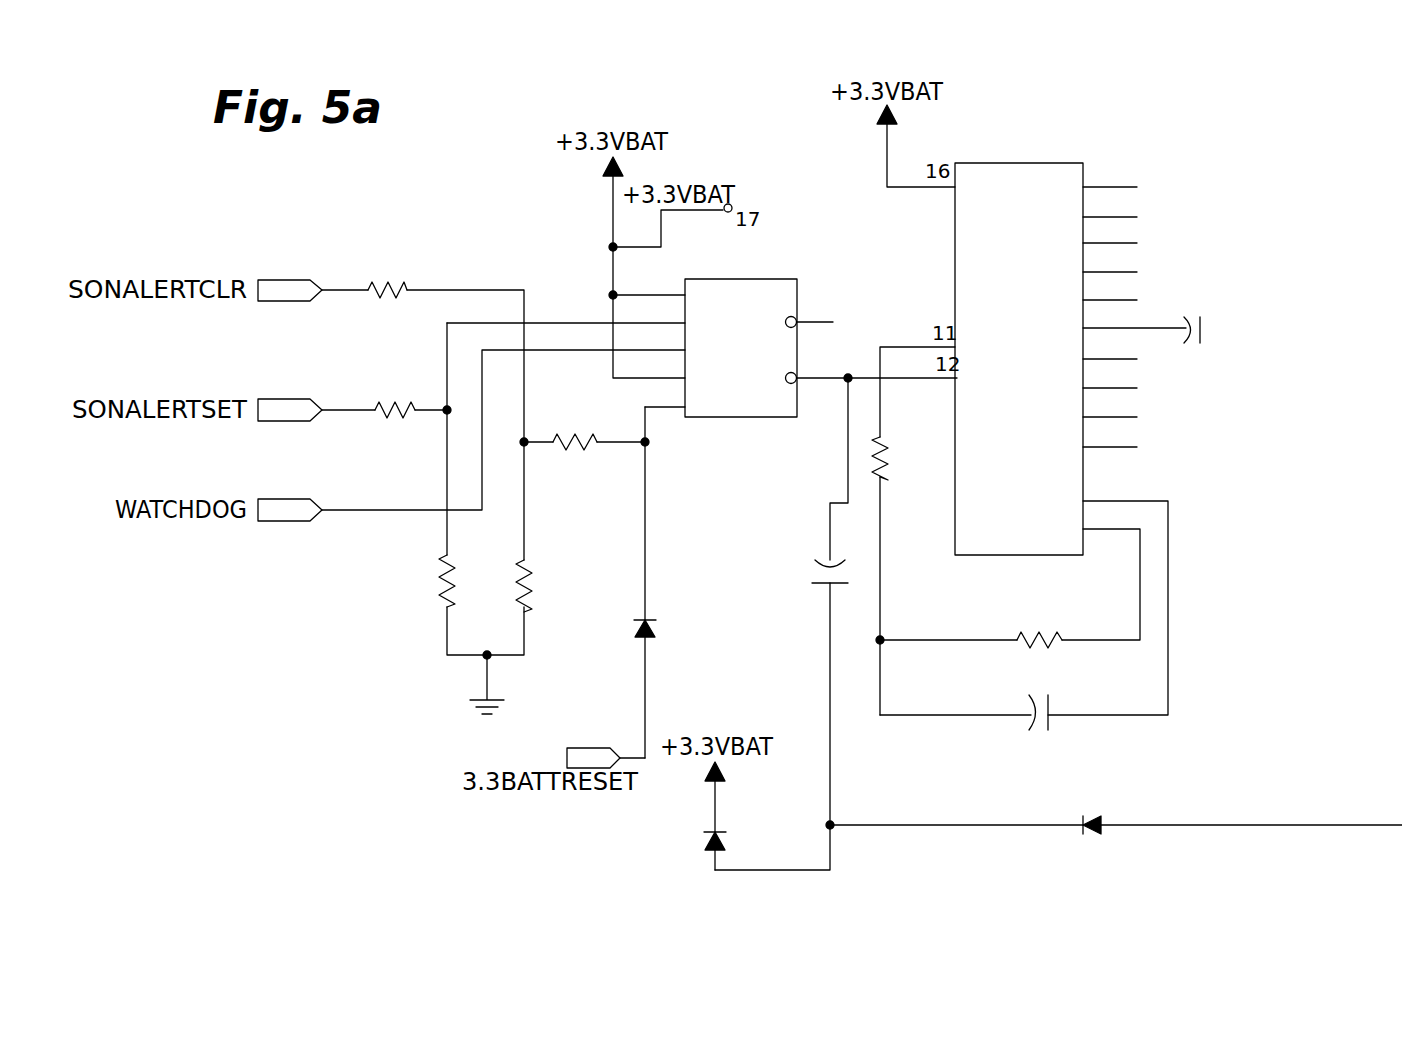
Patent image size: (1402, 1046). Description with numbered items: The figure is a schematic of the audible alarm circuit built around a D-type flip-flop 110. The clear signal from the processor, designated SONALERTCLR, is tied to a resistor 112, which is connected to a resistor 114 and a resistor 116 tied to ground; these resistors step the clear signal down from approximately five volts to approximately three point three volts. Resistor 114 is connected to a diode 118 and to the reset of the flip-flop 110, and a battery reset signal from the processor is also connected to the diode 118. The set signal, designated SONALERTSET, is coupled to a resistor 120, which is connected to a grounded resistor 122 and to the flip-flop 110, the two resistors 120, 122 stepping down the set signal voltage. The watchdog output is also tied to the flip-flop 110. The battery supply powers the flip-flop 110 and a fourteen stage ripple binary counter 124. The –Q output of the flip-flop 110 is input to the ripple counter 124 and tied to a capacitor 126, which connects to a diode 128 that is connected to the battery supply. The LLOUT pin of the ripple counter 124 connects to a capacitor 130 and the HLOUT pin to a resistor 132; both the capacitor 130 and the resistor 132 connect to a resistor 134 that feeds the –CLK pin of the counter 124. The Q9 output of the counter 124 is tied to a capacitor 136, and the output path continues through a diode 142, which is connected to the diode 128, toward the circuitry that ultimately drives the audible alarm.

The D-type flip-flop 110 is at (797, 279).
The resistor 112 is at (398, 287).
The resistor 114 is at (603, 446).
The resistor 116 is at (526, 605).
The diode 118 is at (645, 648).
The resistor 120 is at (395, 395).
The resistor 122 is at (445, 606).
The fourteen stage ripple binary counter 124 is at (1050, 163).
The capacitor 126 is at (838, 586).
The diode 128 is at (716, 830).
The capacitor 130 is at (1025, 727).
The resistor 132 is at (1018, 645).
The resistor 134 is at (890, 478).
The capacitor 136 is at (1205, 320).
The diode 142 is at (1103, 830).